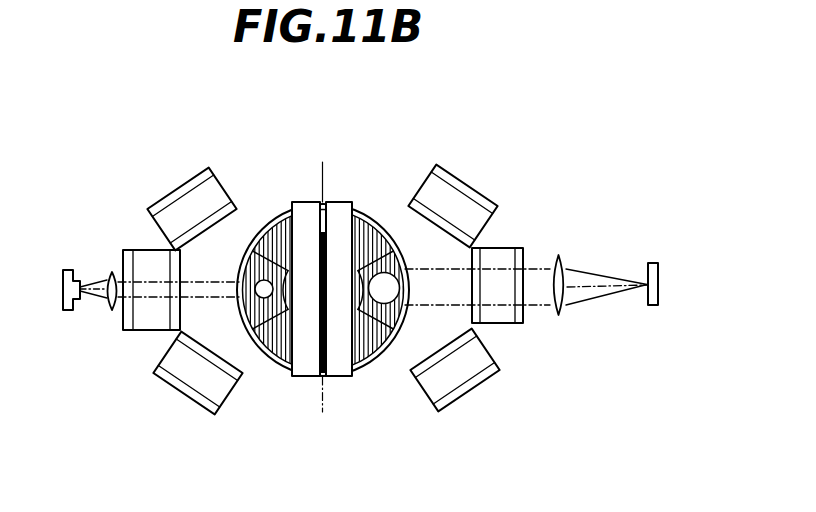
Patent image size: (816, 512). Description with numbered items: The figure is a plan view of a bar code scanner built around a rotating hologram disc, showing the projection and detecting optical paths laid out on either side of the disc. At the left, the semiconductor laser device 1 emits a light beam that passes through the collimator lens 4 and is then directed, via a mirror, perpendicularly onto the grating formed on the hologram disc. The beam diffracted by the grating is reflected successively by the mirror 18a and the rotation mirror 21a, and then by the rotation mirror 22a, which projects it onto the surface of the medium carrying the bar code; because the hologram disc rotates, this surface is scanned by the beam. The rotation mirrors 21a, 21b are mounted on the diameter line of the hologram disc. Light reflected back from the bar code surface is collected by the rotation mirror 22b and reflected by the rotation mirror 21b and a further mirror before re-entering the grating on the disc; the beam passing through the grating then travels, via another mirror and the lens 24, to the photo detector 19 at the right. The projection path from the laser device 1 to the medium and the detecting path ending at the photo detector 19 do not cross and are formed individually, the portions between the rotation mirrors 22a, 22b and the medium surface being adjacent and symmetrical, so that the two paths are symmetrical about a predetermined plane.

The semiconductor laser device 1 is at (65, 270).
The collimator lens 4 is at (112, 274).
The mirror 18a is at (158, 203).
The rotation mirror 21a is at (212, 193).
The rotation mirror 21b is at (423, 190).
The rotation mirror 22a is at (307, 378).
The rotation mirror 22b is at (337, 212).
The lens 24 is at (556, 256).
The photo detector 19 is at (652, 262).